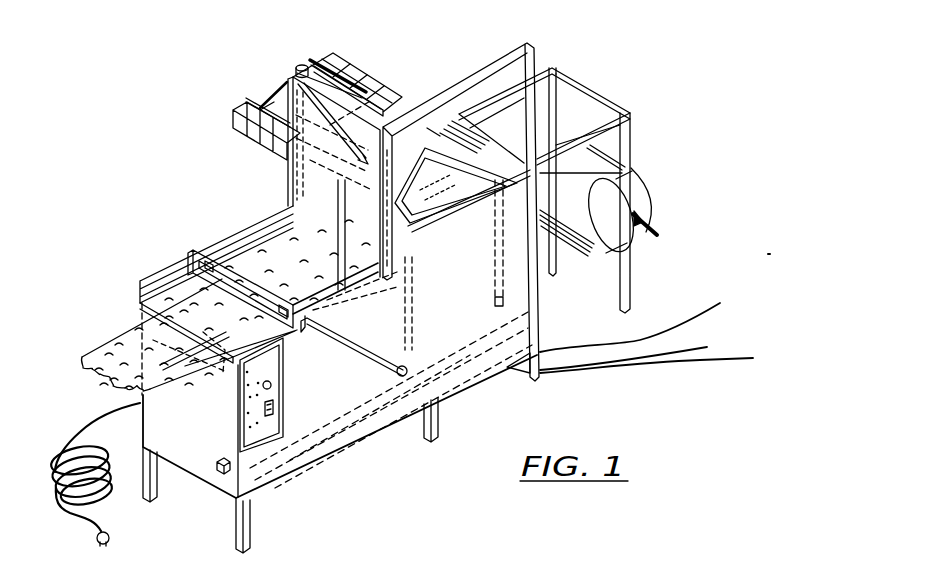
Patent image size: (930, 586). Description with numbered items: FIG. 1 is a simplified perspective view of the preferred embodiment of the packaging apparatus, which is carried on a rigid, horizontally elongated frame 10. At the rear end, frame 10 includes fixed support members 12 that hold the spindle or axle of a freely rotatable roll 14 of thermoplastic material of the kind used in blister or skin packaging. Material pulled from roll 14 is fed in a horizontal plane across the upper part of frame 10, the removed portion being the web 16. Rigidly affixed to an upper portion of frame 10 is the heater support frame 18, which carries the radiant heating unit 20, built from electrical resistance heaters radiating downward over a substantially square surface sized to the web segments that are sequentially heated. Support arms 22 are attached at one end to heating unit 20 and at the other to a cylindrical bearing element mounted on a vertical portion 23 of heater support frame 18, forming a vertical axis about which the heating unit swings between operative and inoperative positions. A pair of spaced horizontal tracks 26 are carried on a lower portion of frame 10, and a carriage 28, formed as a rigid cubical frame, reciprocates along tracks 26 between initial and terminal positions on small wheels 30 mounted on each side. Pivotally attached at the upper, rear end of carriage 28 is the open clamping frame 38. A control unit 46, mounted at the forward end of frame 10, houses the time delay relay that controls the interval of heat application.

The frame 10 is at (255, 236).
The fixed support members 12 is at (633, 148).
The roll 14 is at (644, 192).
The web 16 is at (130, 332).
The heater support frame 18 is at (473, 60).
The radiant heating unit 20 is at (352, 60).
The support arms 22 is at (333, 78).
The vertical portion 23 is at (297, 64).
The horizontal tracks 26 is at (348, 410).
The carriage 28 is at (425, 298).
The small wheels 30 is at (348, 378).
The open clamping frame 38 is at (453, 203).
The control unit 46 is at (269, 438).